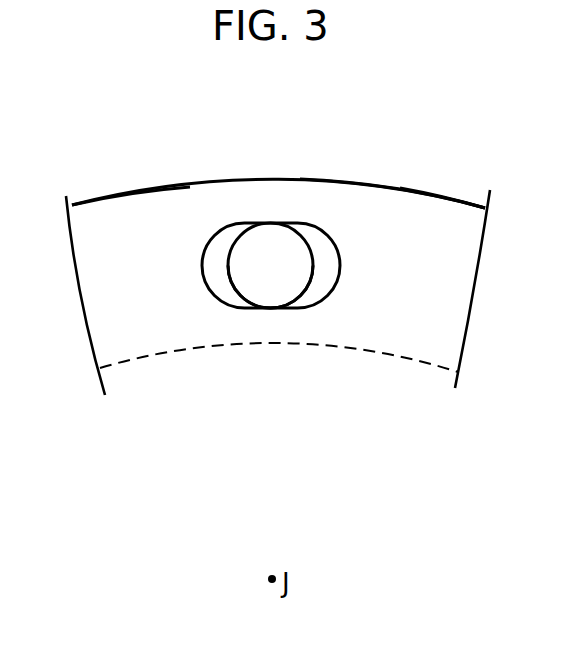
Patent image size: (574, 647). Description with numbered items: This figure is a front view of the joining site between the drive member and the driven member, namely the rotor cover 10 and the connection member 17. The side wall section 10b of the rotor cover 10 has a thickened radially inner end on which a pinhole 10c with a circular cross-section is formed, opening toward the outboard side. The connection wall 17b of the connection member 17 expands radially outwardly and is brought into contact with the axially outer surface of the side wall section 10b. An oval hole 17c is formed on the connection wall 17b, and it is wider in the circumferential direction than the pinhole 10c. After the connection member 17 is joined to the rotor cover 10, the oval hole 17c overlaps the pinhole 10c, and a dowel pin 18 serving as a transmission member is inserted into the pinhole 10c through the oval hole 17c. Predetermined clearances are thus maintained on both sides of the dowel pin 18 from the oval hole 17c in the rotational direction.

The rotor cover 10 is at (150, 215).
The side wall section 10b is at (98, 218).
The pinhole 10c is at (276, 224).
The connection member 17 is at (393, 215).
The connection wall 17b is at (442, 218).
The oval hole 17c is at (339, 248).
The dowel pin 18 is at (268, 305).